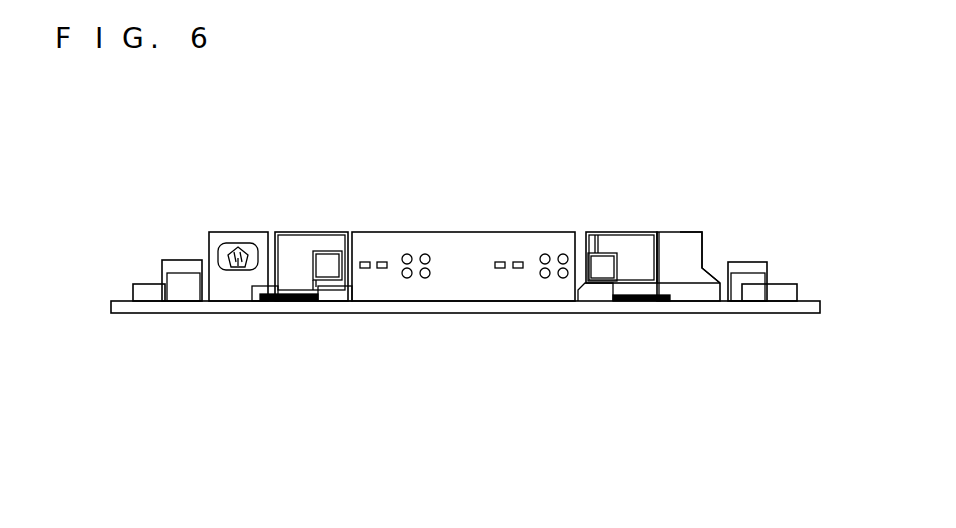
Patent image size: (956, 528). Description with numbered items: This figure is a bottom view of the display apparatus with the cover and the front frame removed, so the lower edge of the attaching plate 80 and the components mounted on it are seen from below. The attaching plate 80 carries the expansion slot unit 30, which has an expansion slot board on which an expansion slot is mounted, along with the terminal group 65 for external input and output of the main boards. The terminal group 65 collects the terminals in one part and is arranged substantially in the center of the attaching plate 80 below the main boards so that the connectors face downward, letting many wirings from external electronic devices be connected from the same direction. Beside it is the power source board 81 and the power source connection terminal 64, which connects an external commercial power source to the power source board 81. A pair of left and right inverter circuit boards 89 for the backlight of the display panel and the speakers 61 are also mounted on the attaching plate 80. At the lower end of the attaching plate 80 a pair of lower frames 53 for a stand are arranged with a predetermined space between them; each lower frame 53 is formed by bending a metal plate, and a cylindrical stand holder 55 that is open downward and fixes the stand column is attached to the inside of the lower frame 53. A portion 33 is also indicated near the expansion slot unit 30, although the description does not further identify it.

The expansion slot unit 30 is at (673, 218).
The connector housing 33 is at (690, 232).
The lower frame for a stand 53 is at (296, 236).
The stand holder 55 is at (326, 253).
The speakers 61 is at (183, 268).
The power source connection terminal 64 is at (228, 270).
The terminal group 65 is at (460, 252).
The attaching plate 80 is at (775, 307).
The power source board 81 is at (298, 298).
The inverter circuit boards 89 is at (148, 284).